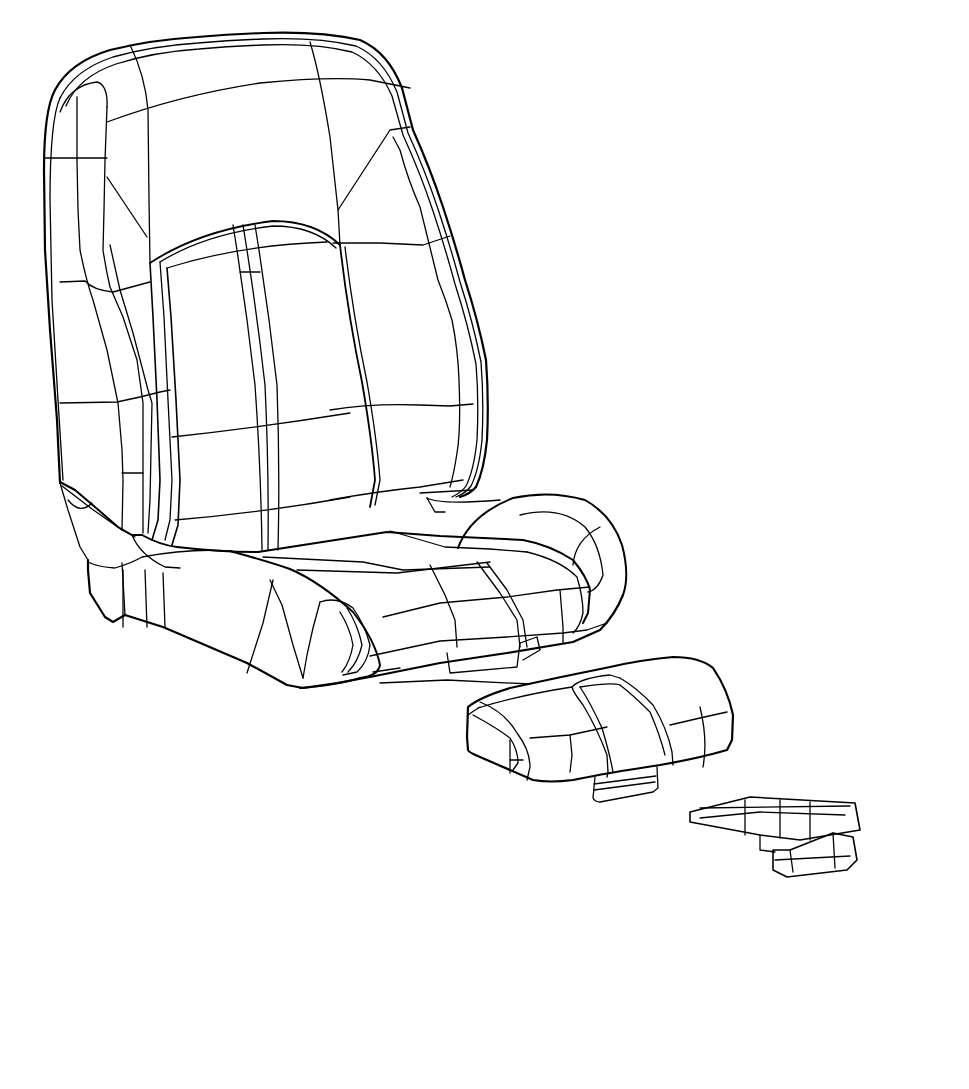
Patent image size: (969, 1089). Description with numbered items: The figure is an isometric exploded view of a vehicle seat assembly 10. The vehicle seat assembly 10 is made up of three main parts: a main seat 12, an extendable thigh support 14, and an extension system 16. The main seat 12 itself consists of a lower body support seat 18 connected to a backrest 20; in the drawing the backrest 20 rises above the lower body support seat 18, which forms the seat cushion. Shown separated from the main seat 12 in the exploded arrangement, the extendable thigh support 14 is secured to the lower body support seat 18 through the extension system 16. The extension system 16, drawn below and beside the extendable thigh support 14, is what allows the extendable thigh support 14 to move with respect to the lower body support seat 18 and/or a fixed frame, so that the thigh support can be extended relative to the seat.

The vehicle seat assembly 10 is at (660, 52).
The main seat 12 is at (438, 206).
The extendable thigh support 14 is at (692, 677).
The extension system 16 is at (800, 796).
The lower body support seat 18 is at (557, 513).
The backrest 20 is at (474, 323).